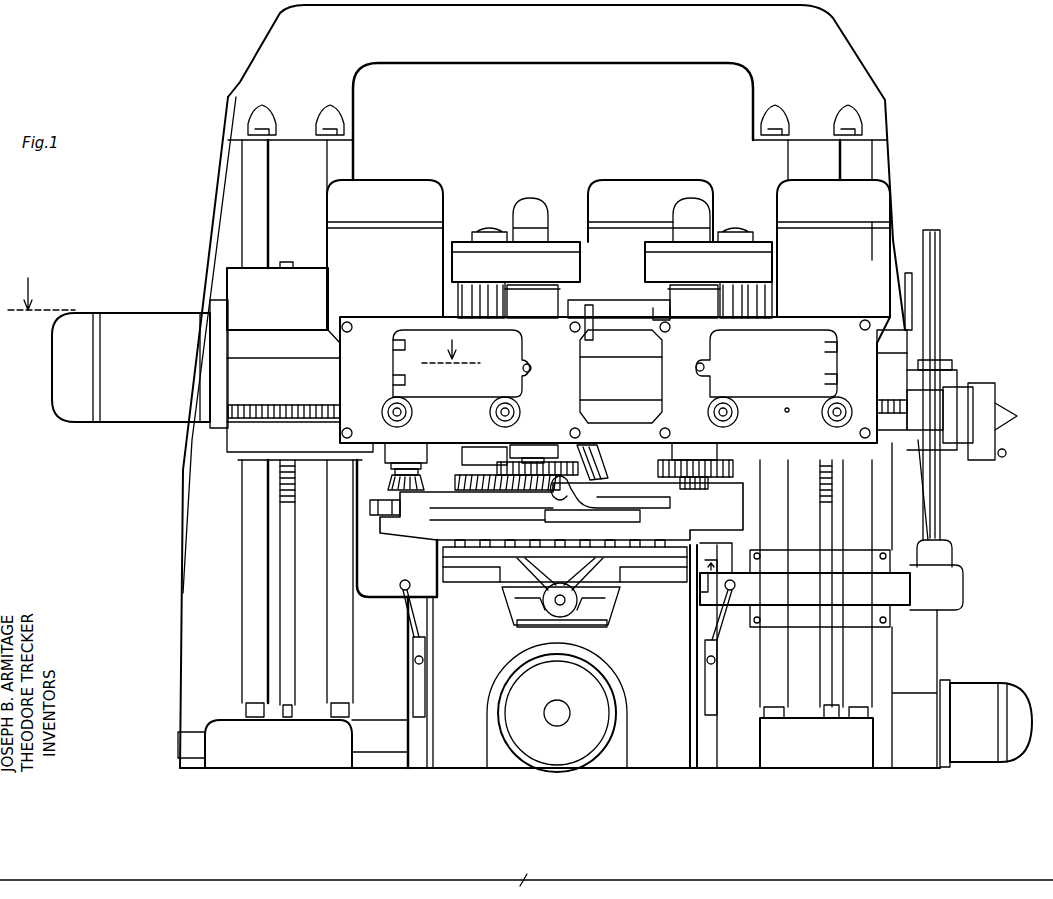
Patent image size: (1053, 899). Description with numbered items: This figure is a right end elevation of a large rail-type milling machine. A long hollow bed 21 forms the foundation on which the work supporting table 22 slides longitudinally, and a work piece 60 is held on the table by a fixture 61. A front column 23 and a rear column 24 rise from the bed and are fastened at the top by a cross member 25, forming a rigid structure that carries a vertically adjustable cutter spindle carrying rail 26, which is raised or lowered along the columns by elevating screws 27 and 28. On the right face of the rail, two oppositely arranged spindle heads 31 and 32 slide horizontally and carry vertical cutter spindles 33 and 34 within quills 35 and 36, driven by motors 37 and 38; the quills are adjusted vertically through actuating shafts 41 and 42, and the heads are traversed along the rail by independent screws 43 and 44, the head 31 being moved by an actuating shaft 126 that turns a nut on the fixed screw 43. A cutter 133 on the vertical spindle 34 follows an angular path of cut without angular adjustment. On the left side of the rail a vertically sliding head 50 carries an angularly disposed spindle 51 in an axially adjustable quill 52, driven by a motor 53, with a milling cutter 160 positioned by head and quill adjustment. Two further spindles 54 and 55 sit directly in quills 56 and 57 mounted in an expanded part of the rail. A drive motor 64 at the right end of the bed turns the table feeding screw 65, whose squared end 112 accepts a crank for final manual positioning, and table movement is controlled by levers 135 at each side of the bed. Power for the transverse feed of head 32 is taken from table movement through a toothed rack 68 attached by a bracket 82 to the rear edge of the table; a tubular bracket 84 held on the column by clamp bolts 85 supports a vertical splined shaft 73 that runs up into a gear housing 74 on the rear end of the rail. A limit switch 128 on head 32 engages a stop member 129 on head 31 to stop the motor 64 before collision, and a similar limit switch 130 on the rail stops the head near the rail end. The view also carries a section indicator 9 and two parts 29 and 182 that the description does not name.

The section line arrow 9 is at (41, 307).
The bed 21 is at (680, 705).
The work supporting table 22 is at (650, 545).
The front column 23 is at (240, 190).
The rear column 24 is at (893, 156).
The tie rail or cross member 25 is at (541, 48).
The cutter spindle carrying rail 26 is at (240, 340).
The elevating screw 27 is at (290, 488).
The elevating screw 28 is at (815, 480).
The motor 29 is at (975, 697).
The spindle carrying head 31 is at (413, 320).
The spindle carrying head 32 is at (810, 326).
The cutter carrying spindle 33 is at (538, 457).
The cutter carrying spindle 34 is at (705, 458).
The quill 35 is at (548, 307).
The quill 36 is at (697, 310).
The motor 37 is at (410, 188).
The motor 38 is at (818, 198).
The actuating shaft 41 is at (520, 412).
The actuating shaft 42 is at (716, 418).
The traversing screw 43 is at (275, 408).
The traversing screw 44 is at (887, 400).
The spindle head 50 is at (601, 243).
The tool carrying spindle 51 is at (565, 450).
The quill 52 is at (580, 460).
The motor 53 is at (636, 188).
The cutter carrying spindle 54 is at (395, 478).
The cutter carrying spindle 55 is at (462, 474).
The quill 56 is at (415, 450).
The quill 57 is at (478, 452).
The work piece 60 is at (470, 505).
The fixture 61 is at (512, 522).
The drive motor 64 is at (600, 688).
The table feeding screw 65 is at (557, 605).
The toothed rack 68 is at (705, 585).
The splined shaft 73 is at (933, 310).
The gear housing 74 is at (983, 393).
The bracket 82 is at (720, 565).
The tubular bracket 84 is at (895, 608).
The clamp bolts 85 is at (880, 555).
The squared end 112 is at (561, 597).
The actuating shaft 126 is at (383, 412).
The limit switch arrangement 128 is at (657, 312).
The actuating stop member 129 is at (589, 330).
The limit switch 130 is at (905, 312).
The cutter 133 is at (665, 468).
The manually operable levers 135 is at (405, 583).
The milling cutter 160 is at (572, 488).
The feed motor 182 is at (138, 332).